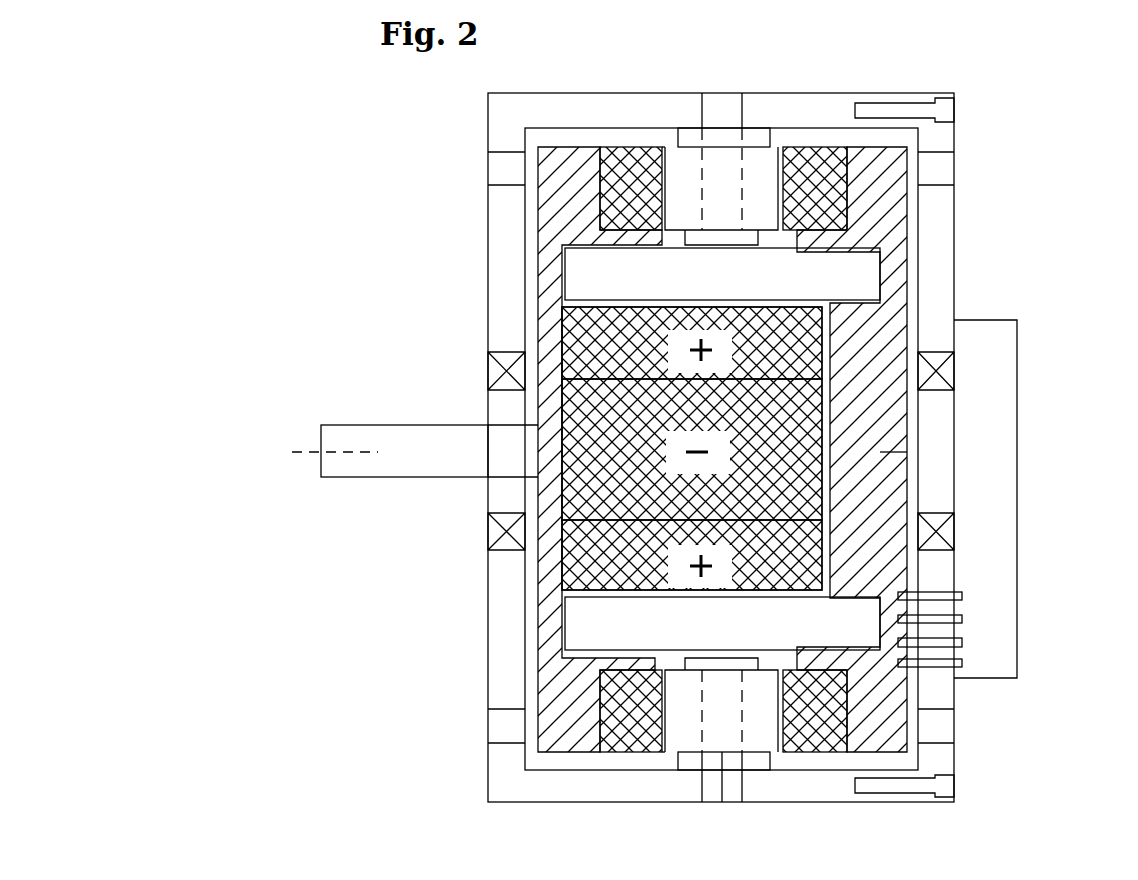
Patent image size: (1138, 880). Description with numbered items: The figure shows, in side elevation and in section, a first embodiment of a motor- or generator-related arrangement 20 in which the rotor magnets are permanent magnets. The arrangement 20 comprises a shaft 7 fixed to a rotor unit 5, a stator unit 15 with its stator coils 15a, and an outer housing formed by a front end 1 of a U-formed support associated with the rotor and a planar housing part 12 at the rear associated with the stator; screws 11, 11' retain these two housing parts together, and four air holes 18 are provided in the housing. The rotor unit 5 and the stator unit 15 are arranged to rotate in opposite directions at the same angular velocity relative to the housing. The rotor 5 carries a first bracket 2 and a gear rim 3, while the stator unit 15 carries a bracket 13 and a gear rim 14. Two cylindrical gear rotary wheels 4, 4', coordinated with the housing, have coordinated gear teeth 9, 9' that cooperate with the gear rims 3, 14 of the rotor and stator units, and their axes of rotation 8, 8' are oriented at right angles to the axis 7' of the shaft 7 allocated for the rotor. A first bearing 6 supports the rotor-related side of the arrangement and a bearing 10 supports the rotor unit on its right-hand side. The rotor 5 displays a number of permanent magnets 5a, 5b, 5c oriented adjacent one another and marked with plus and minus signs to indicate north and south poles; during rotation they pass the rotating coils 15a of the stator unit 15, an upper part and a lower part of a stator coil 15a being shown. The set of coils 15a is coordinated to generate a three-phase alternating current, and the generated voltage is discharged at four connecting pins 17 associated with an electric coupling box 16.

The front end of housing 1 is at (510, 608).
The first bracket 2 is at (565, 668).
The gear rim 3 is at (628, 160).
The gear rotary wheel 4 is at (722, 144).
The gear rotary wheel 4' is at (721, 757).
The rotor unit 5 is at (581, 424).
The permanent magnet 5a is at (588, 316).
The permanent magnet 5b is at (590, 400).
The permanent magnet 5c is at (592, 578).
The first bearing 6 is at (500, 370).
The shaft 7 is at (428, 410).
The axis of rotation 7' is at (295, 436).
The axis of rotation 8 is at (724, 83).
The axis of rotation 8' is at (715, 804).
The gear teeth 9 is at (673, 95).
The gear teeth 9' is at (643, 794).
The bearing 10 is at (950, 367).
The screw 11 is at (947, 110).
The screw 11' is at (965, 795).
The planar housing part 12 is at (945, 215).
The bracket 13 is at (878, 695).
The gear rim 14 is at (822, 175).
The stator unit 15 is at (855, 272).
The stator coil 15a is at (782, 293).
The electric coupling box 16 is at (995, 445).
The connecting pins 17 is at (1000, 660).
The air hole 18 is at (483, 165).
The arrangement 20 is at (1098, 183).